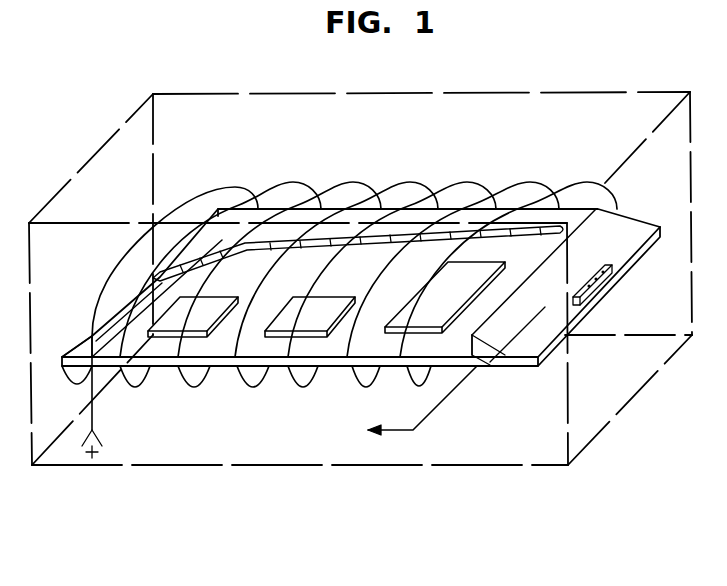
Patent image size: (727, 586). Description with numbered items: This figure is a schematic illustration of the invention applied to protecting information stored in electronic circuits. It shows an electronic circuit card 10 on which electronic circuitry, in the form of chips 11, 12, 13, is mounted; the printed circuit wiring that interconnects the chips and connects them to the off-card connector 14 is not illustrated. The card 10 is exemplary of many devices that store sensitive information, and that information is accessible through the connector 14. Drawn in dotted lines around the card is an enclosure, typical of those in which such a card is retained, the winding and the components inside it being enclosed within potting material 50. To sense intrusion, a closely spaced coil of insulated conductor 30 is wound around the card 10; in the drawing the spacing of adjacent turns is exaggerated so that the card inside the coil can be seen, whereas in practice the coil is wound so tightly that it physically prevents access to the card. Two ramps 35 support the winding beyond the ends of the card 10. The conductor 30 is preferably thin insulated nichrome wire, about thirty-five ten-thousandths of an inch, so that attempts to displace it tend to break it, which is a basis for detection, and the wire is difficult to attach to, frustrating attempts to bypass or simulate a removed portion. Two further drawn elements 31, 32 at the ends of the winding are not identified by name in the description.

The electronic circuit card 10 is at (342, 352).
The chip 11 is at (478, 277).
The chip 12 is at (340, 293).
The chip 13 is at (223, 293).
The off-card connector 14 is at (607, 273).
The insulated conductor 30 is at (466, 180).
The coil lead 31 is at (92, 417).
The coil lead 32 is at (413, 430).
The ramp 35 is at (83, 352).
The potting material 50 is at (567, 92).